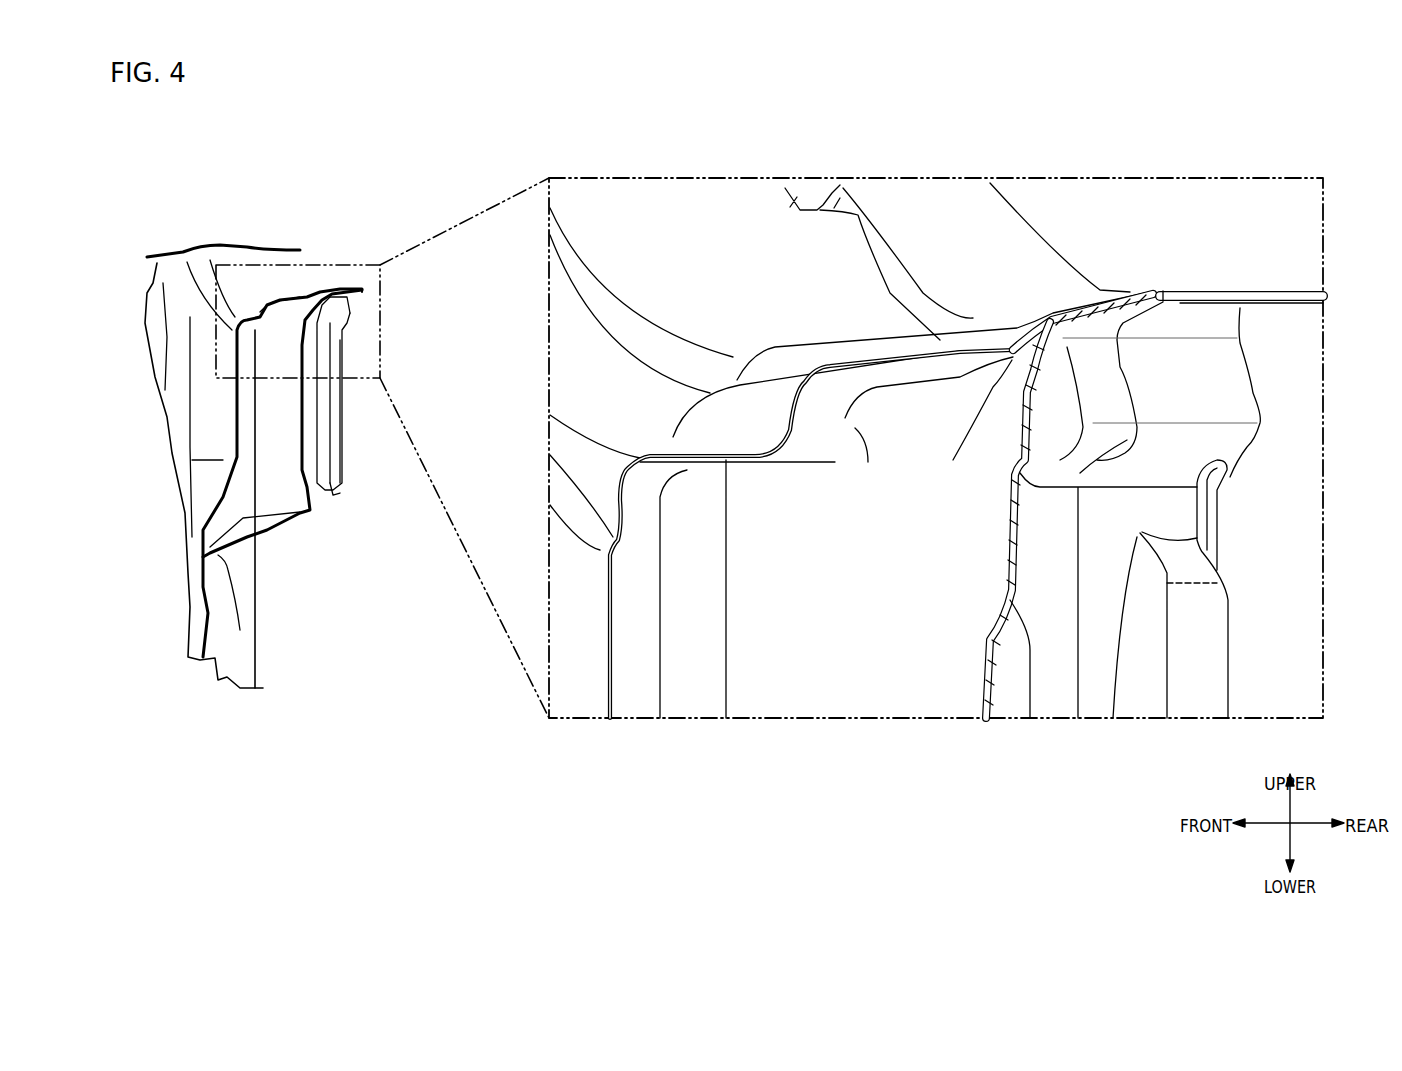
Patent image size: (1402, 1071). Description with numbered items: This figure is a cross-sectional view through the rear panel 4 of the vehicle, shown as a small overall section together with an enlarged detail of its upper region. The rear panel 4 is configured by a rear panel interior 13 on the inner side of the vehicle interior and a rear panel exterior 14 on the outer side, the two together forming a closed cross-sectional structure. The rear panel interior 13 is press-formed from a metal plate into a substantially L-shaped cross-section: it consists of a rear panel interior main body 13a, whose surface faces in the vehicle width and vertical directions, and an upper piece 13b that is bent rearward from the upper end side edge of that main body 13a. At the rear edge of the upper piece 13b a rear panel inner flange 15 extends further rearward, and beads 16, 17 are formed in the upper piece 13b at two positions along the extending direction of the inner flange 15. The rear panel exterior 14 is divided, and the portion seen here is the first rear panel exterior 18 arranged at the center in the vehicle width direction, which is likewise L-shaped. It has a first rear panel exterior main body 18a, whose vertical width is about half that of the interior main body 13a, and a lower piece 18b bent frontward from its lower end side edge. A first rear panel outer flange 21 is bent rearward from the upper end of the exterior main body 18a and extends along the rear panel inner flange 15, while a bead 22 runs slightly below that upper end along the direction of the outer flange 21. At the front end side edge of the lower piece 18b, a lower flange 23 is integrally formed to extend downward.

The rear panel 4 is at (270, 648).
The rear panel interior 13 is at (173, 500).
The rear panel interior main body 13a is at (178, 447).
The upper piece 13b is at (273, 312).
The rear panel exterior 14 is at (352, 443).
The rear panel inner flange 15 is at (323, 287).
The bead 16 is at (257, 317).
The bead 17 is at (1013, 355).
The first rear panel exterior 18 is at (353, 497).
The first rear panel exterior main body 18a is at (340, 407).
The lower piece 18b is at (272, 530).
The first rear panel outer flange 21 is at (360, 290).
The bead 22 is at (347, 313).
The lower flange 23 is at (240, 630).